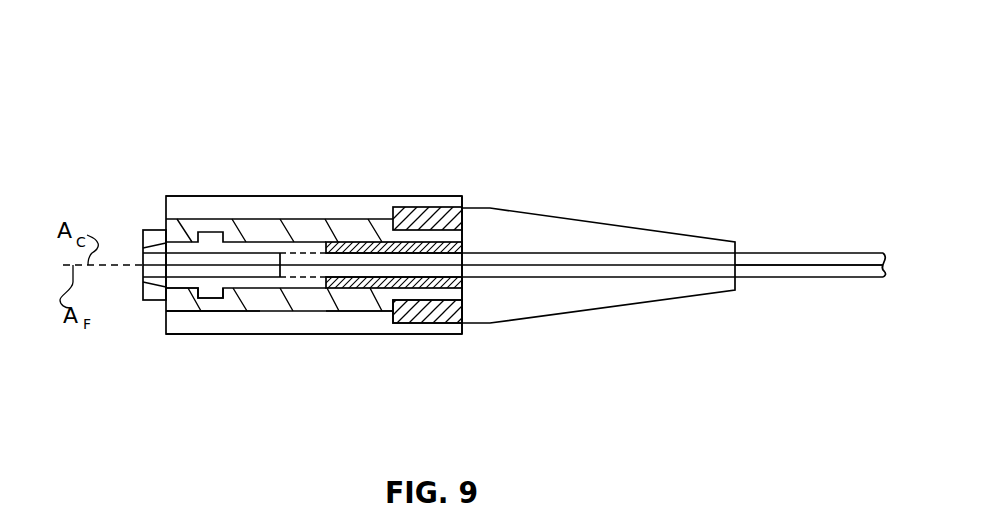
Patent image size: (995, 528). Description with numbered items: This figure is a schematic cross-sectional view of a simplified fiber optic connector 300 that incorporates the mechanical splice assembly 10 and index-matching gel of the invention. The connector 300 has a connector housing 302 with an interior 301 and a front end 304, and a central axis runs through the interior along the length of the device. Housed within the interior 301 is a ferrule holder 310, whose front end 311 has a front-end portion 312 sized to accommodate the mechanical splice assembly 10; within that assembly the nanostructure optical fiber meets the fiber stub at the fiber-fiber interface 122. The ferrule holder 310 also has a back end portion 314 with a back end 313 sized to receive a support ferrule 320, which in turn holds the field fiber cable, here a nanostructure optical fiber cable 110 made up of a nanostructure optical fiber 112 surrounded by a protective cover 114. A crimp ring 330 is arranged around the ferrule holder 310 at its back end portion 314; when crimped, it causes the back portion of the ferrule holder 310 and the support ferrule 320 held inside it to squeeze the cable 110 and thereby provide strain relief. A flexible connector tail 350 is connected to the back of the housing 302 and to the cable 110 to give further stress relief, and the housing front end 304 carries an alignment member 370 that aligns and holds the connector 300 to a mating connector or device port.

The fiber optic connector 300 is at (177, 68).
The interior 301 is at (345, 212).
The connector housing 302 is at (373, 195).
The front end 304 is at (166, 196).
The ferrule holder 310 is at (298, 218).
The mechanical splice assembly 10 is at (248, 295).
The fiber-fiber interface 122 is at (188, 262).
The alignment member 370 is at (143, 230).
The support ferrule 320 is at (347, 290).
The back end portion 314 is at (370, 312).
The crimp ring 330 is at (417, 289).
The back end 313 is at (462, 297).
The front end 311 is at (166, 311).
The front-end portion 312 is at (223, 315).
The flexible connector tail 350 is at (597, 220).
The protective cover 114 is at (802, 253).
The nanostructure optical fiber 112 is at (817, 265).
The nanostructure optical fiber cable 110 is at (786, 295).